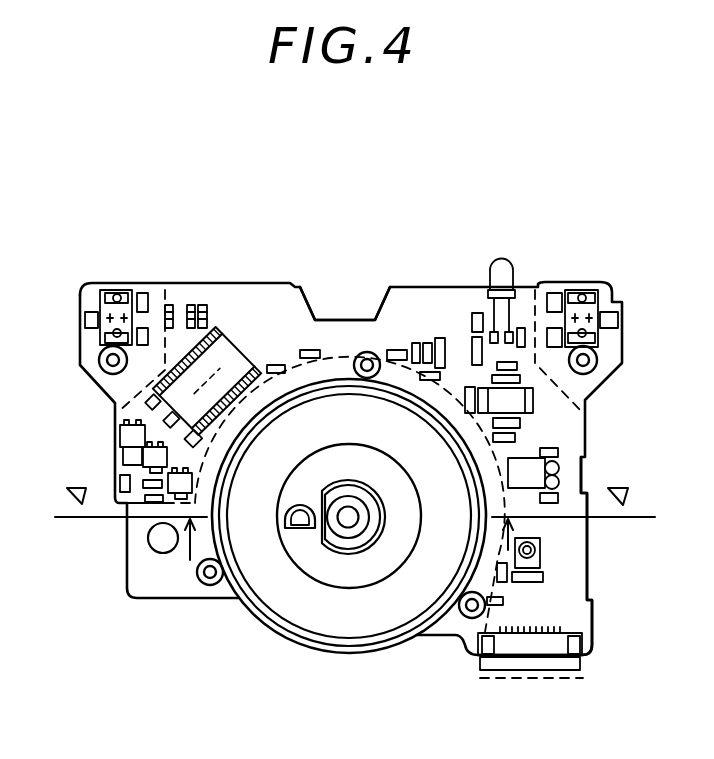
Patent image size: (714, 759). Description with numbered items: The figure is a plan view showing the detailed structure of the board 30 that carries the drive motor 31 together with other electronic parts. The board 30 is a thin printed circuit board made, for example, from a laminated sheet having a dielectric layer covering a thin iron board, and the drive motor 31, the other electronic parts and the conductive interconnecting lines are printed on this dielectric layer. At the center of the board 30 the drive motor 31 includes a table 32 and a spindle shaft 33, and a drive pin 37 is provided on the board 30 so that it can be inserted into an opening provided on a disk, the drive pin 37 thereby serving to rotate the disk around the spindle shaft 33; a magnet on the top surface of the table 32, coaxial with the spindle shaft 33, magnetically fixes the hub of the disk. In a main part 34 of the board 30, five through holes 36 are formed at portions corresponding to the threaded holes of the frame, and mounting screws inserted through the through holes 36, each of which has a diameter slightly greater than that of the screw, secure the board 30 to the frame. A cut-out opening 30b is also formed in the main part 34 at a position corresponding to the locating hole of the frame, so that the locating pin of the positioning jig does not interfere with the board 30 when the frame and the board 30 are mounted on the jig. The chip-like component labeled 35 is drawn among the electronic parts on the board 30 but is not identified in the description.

The board 30 is at (517, 187).
The cut-out opening 30b is at (317, 300).
The drive motor 31 is at (390, 620).
The table 32 is at (342, 573).
The spindle shaft 33 is at (338, 530).
The main part 34 is at (575, 572).
The IC chip 35 is at (222, 328).
The through holes 36 is at (104, 370).
The drive pin 37 is at (302, 502).